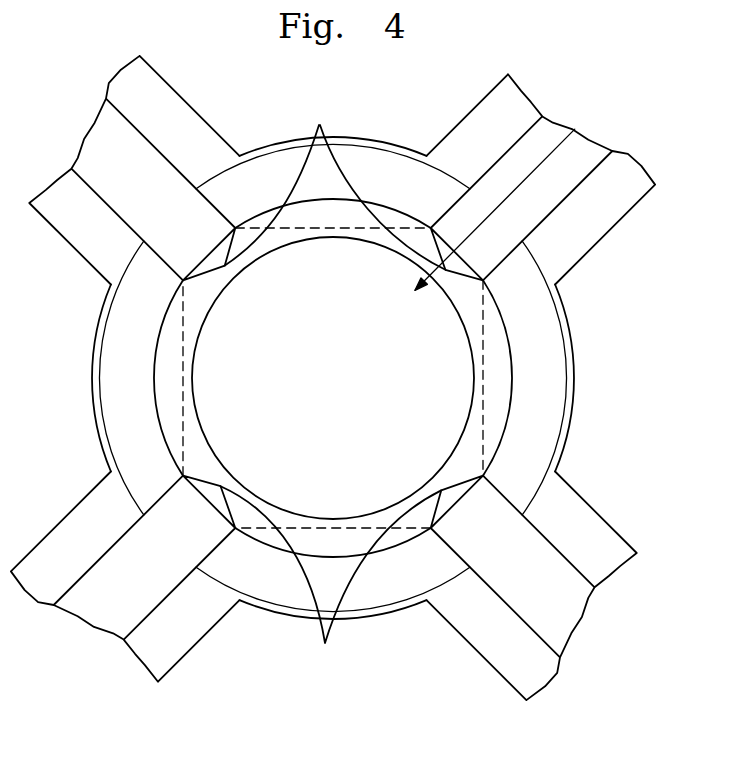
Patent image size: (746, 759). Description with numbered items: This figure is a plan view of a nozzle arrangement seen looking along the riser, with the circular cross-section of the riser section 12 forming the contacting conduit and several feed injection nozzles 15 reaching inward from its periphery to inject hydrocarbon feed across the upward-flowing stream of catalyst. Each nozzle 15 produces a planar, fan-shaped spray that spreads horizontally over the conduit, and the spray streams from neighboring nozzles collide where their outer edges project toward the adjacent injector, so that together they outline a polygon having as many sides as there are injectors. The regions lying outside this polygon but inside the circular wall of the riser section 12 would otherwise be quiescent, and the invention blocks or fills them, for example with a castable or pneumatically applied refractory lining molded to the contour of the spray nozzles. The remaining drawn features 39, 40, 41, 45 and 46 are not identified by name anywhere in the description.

The upper riser section 12 is at (572, 426).
The feed injection nozzle 15 is at (600, 239).
The resilient finger 39 is at (333, 386).
The central opening 40 is at (470, 316).
The inner edge of opening 41 is at (473, 357).
The inner wall of ring 45 is at (513, 388).
The square recess outline 46 is at (183, 390).